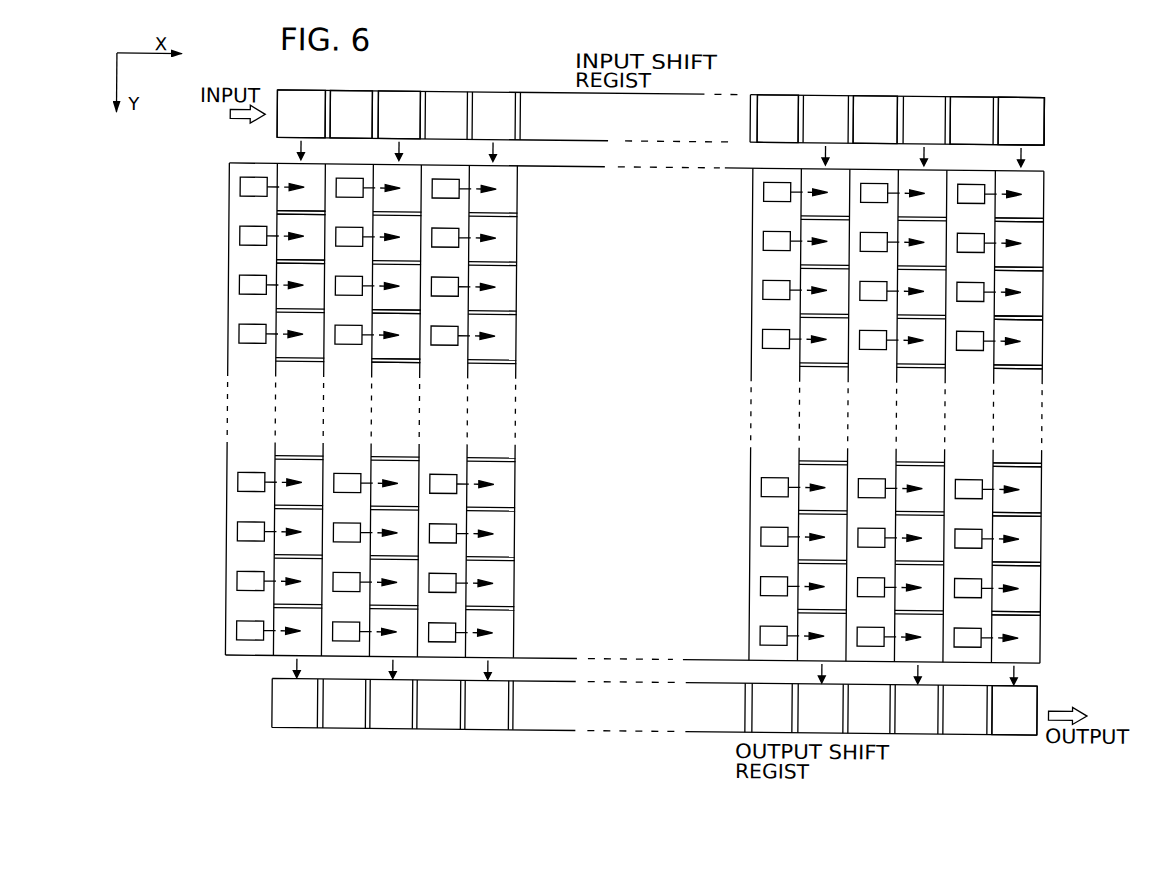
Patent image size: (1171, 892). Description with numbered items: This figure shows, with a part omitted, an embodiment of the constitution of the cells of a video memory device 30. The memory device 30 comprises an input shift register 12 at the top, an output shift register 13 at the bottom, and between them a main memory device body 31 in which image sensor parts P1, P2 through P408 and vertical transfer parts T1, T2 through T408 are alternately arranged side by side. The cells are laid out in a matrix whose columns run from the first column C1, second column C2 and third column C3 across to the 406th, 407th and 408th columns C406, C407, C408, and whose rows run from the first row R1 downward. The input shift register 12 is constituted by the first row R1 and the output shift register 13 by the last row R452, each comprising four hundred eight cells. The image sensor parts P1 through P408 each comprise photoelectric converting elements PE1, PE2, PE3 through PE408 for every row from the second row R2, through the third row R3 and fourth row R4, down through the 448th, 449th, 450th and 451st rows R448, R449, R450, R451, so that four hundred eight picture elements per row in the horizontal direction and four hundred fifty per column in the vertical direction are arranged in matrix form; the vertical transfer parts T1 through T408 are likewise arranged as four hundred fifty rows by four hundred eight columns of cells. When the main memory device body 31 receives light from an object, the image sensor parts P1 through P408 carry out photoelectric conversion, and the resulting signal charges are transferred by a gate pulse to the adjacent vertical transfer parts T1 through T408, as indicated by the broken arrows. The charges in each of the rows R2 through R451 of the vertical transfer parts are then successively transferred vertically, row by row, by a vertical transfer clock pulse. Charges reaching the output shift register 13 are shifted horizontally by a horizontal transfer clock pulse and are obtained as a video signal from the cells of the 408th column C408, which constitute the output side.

The input shift register 12 is at (550, 92).
The output shift register 13 is at (700, 733).
The memory device 30 is at (878, 48).
The main memory device body 31 is at (221, 276).
The first column C1 is at (304, 91).
The second column C2 is at (408, 90).
The third column C3 is at (500, 89).
The 406th column C406 is at (824, 81).
The 407th column C407 is at (922, 79).
The 408th column C408 is at (1015, 94).
The first row R1 is at (1044, 118).
The second row R2 is at (1044, 201).
The third row R3 is at (1044, 242).
The fourth row R4 is at (1044, 293).
The 448th row R448 is at (1043, 496).
The 449th row R449 is at (1043, 544).
The 450th row R450 is at (1044, 593).
The 451st row R451 is at (1044, 641).
The 452nd row R452 is at (1042, 691).
The photoelectric converting element PE1 is at (238, 191).
The photoelectric converting element PE2 is at (343, 183).
The photoelectric converting element PE3 is at (441, 182).
The photoelectric converting element PE408 is at (965, 184).
The image sensor part P1 is at (232, 217).
The image sensor part P2 is at (331, 301).
The image sensor part P408 is at (984, 208).
The vertical transfer part T1 is at (282, 250).
The vertical transfer part T2 is at (380, 348).
The vertical transfer part T408 is at (1023, 351).